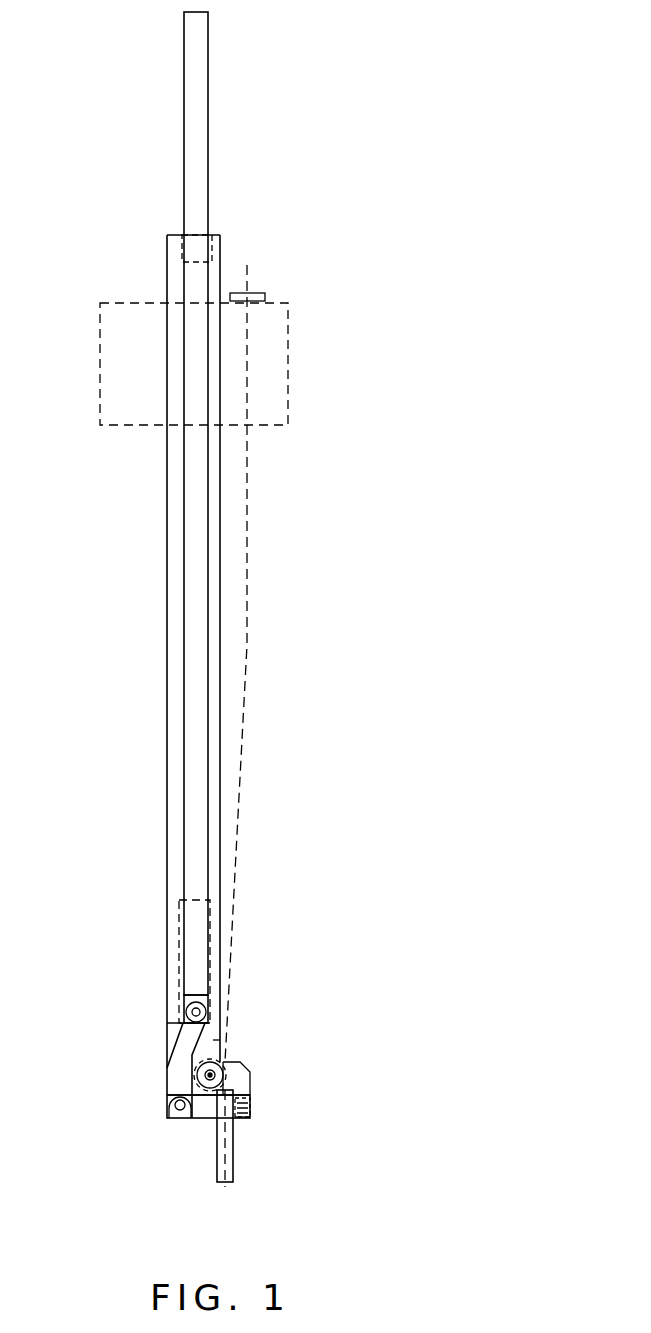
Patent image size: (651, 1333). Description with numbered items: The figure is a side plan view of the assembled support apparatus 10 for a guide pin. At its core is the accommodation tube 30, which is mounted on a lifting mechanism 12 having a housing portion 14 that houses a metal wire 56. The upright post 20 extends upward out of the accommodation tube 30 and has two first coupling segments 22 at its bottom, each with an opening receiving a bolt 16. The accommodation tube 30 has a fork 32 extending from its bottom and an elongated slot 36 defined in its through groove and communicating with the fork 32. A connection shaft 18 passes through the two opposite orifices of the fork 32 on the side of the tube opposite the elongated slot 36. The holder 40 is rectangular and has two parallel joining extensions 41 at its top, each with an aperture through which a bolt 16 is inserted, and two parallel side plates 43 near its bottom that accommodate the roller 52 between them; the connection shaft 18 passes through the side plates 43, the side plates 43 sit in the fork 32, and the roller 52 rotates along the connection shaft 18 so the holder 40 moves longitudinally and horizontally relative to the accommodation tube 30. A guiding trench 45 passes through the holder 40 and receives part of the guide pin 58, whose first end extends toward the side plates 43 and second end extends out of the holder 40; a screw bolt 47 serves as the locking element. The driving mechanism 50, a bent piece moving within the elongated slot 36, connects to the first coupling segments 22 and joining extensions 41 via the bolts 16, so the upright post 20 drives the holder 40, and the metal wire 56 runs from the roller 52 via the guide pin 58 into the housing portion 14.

The support apparatus 10 is at (272, 221).
The lifting mechanism 12 is at (140, 302).
The housing portion 14 is at (258, 295).
The bolt 16 is at (196, 1012).
The connection shaft 18 is at (224, 1064).
The upright post 20 is at (195, 600).
The first coupling segment 22 is at (195, 1000).
The accommodation tube 30 is at (176, 497).
The fork 32 is at (213, 1042).
The elongated slot 36 is at (173, 935).
The holder 40 is at (205, 1113).
The joining extension 41 is at (167, 1117).
The side plate 43 is at (240, 1077).
The guiding trench 45 is at (243, 1117).
The screw bolt 47 is at (258, 1105).
The driving mechanism 50 is at (172, 1063).
The roller 52 is at (165, 1098).
The metal wire 56 is at (247, 645).
The guide pin 58 is at (233, 1167).